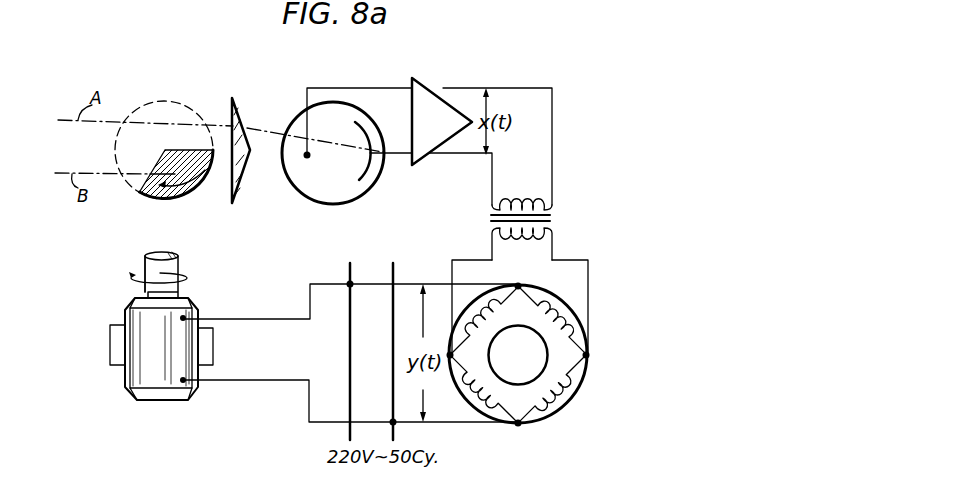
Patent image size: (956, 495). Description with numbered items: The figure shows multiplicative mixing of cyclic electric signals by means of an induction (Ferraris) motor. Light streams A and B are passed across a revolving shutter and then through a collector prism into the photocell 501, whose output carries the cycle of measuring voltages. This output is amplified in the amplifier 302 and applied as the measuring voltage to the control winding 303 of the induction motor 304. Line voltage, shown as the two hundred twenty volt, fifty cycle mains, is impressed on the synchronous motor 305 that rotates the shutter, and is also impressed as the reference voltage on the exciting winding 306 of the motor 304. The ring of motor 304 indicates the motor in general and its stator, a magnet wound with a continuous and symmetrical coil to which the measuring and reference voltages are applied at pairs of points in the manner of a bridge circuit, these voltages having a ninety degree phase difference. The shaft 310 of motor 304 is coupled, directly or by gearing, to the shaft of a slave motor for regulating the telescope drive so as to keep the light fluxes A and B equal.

The photoelectric detector 501 is at (325, 187).
The amplifier 302 is at (437, 100).
The control winding 303 is at (452, 262).
The induction (Ferraris) motor 304 is at (557, 407).
The shaft 310 is at (537, 343).
The synchronous motor 305 is at (125, 374).
The exciting winding 306 is at (370, 280).